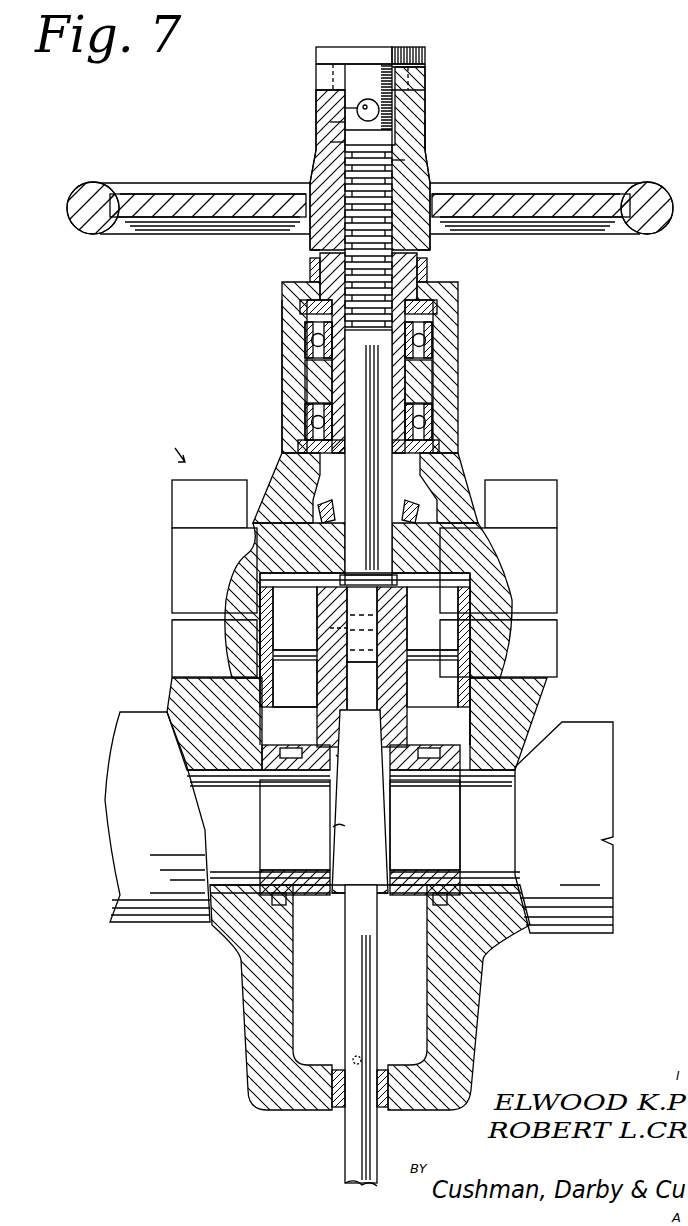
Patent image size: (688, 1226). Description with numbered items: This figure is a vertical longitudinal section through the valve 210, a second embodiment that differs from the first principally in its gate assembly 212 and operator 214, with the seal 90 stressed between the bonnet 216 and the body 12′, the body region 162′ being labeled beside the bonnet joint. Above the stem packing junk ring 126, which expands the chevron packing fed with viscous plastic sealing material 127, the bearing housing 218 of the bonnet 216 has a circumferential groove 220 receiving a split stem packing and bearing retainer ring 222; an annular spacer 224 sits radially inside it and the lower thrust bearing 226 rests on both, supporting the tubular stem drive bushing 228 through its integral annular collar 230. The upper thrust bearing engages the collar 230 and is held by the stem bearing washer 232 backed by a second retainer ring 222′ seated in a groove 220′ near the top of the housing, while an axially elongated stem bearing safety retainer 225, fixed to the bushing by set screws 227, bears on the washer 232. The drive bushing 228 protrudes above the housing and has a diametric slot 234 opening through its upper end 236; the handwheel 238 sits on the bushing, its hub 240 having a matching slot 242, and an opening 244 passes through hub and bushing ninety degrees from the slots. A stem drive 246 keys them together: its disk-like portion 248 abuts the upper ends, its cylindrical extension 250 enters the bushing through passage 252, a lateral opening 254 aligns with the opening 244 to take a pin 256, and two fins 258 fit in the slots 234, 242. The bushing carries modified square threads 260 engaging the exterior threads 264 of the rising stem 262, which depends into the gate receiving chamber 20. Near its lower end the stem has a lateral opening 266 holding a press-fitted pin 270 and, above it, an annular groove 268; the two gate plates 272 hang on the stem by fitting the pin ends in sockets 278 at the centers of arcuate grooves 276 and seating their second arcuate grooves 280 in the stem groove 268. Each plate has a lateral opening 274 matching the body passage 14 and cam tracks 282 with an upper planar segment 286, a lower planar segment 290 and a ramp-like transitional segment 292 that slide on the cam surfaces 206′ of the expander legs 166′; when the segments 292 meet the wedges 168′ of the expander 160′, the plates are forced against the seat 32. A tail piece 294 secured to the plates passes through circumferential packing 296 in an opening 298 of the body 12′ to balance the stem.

The stem drive 246 is at (321, 62).
The upper end of drive bushing 236 is at (425, 52).
The fins 258 is at (318, 83).
The diametric slot 234 is at (408, 88).
The diametric slot 242 is at (428, 92).
The opening 244 is at (363, 100).
The pin 256 is at (383, 112).
The lateral opening 254 is at (356, 108).
The cylindrical extension 250 is at (343, 124).
The passage 252 is at (343, 143).
The handwheel hub 240 is at (415, 147).
The exterior threads of stem 264 is at (396, 174).
The disk-like portion 248 is at (410, 48).
The handwheel 238 is at (540, 194).
The stem drive bushing 228 is at (322, 266).
The set screws 227 is at (422, 265).
The stem bearing safety retainer 225 is at (422, 277).
The operator 214 is at (466, 383).
The bearing housing 218 is at (281, 372).
The stem bearing washer 232 is at (434, 318).
The lower thrust bearing 226 is at (304, 428).
The annular spacer 224 is at (434, 430).
The annular collar 230 is at (304, 383).
The circumferential groove 220′ is at (300, 308).
The second split stem packing and bearing retainer ring 222′ is at (438, 304).
The circumferential groove 220 is at (298, 445).
The split stem packing and bearing retainer ring 222 is at (440, 446).
The stem packing junk ring 126 is at (440, 464).
The rising stem 262 is at (320, 507).
The valve 210 is at (156, 448).
The modified square threads 260 is at (364, 335).
The viscous plastic sealing material 127 is at (348, 520).
The body 12′ is at (242, 958).
The bonnet 216 is at (182, 562).
The annular sealing member 90 is at (472, 600).
The annular groove 268 is at (411, 667).
The lateral opening 266 is at (345, 667).
The second arcuate groove 280 is at (352, 612).
The socket 278 is at (320, 614).
The pin 270 is at (330, 630).
The arcuate groove 276 is at (330, 646).
The gate plates 272 is at (365, 647).
The upper planar segment 286 is at (362, 704).
The expander legs 166′ is at (350, 693).
The body neck 162′ is at (472, 676).
The gate assembly 212 is at (310, 786).
The transitional segment 292 is at (360, 727).
The cam track 282 is at (376, 782).
The valve body passage 14 is at (244, 854).
The seat 32 is at (262, 812).
The lateral opening 274 is at (320, 866).
The wedges 168′ is at (372, 865).
The cam surfaces 206′ is at (353, 835).
The lower planar segment 290 is at (335, 884).
The expander 160′ is at (397, 800).
The gate receiving chamber 20 is at (425, 995).
The tail piece 294 is at (346, 1000).
The circumferential packing 296 is at (335, 1100).
The opening 298 is at (380, 1110).